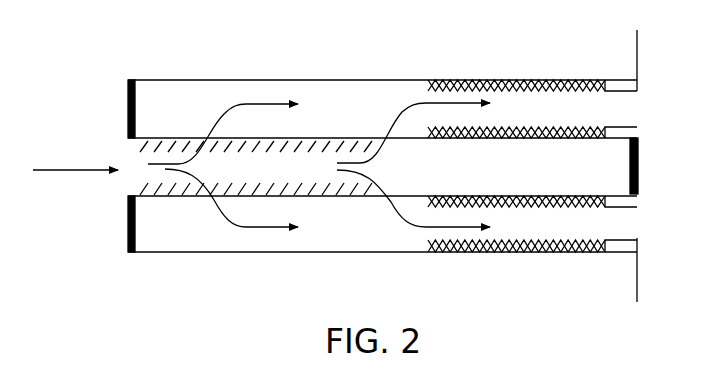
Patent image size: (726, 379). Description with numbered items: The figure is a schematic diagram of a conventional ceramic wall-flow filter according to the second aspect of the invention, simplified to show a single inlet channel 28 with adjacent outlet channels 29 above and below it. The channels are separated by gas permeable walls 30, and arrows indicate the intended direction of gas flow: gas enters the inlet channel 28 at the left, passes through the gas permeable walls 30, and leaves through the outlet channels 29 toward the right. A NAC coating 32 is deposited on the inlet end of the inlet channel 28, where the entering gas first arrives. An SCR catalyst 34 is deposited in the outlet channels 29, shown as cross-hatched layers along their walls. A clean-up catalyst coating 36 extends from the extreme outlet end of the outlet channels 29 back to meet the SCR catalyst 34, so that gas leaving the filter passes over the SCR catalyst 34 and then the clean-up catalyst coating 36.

The inlet channel 28 is at (446, 178).
The outlet channels 29 is at (328, 118).
The gas permeable walls 30 is at (165, 138).
The NAC coating 32 is at (135, 146).
The SCR catalyst 34 is at (553, 123).
The clean-up catalyst coating 36 is at (637, 238).